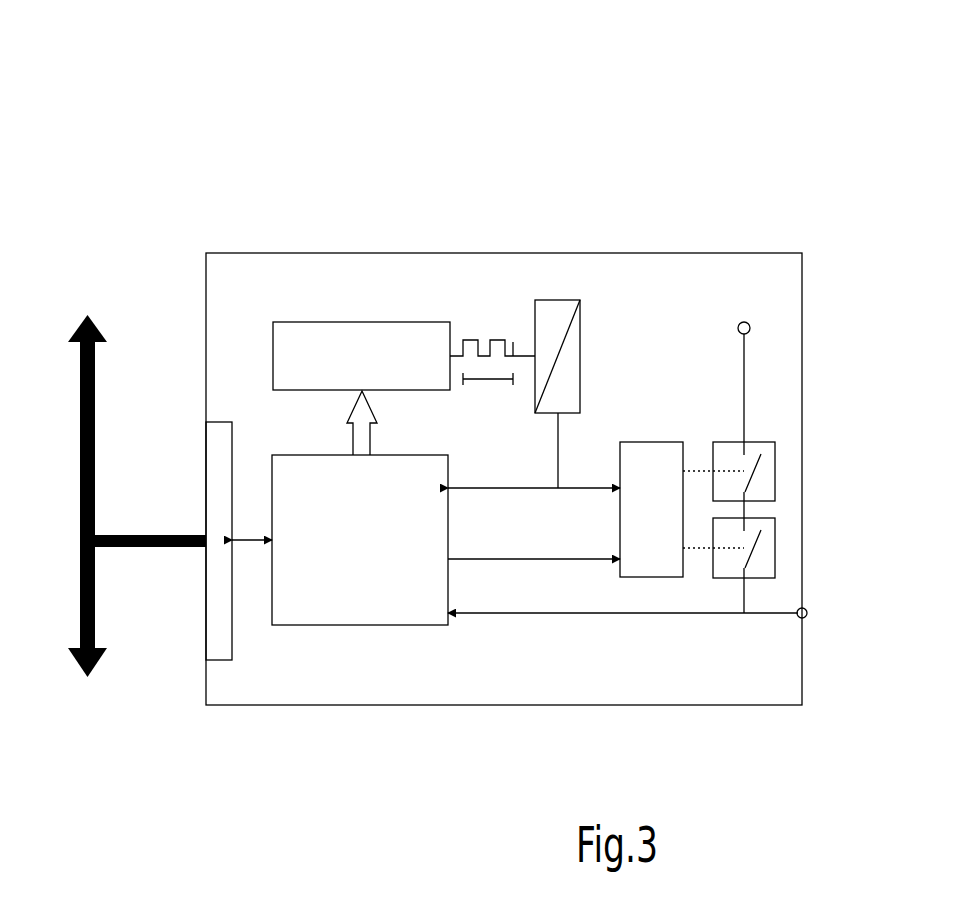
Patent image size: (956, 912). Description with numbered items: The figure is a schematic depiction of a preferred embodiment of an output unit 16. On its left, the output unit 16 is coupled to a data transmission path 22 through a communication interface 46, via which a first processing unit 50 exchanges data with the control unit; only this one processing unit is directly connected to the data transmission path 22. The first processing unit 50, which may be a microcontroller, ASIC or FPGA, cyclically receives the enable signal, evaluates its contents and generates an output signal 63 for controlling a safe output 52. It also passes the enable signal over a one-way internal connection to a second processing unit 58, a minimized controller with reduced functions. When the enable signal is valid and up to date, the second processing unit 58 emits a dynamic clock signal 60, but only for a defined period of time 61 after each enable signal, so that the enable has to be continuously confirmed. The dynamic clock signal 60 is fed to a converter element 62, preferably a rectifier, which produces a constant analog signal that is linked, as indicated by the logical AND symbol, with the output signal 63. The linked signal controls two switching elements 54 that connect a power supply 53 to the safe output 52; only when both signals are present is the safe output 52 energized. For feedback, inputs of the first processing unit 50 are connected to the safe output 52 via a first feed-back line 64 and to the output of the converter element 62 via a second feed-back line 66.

The output unit 16 is at (465, 172).
The data transmission path 22 is at (80, 468).
The communication interface 46 is at (215, 630).
The first processing unit 50 is at (397, 618).
The safe output 52 is at (807, 612).
The power supply 53 is at (750, 324).
The switching elements 54 is at (770, 475).
The second processing unit 58 is at (305, 338).
The dynamic clock signal 60 is at (495, 340).
The defined period of time 61 is at (487, 383).
The converter element 62 is at (578, 345).
The output signal 63 is at (587, 559).
The first feed-back line 64 is at (520, 613).
The second feed-back line 66 is at (592, 488).